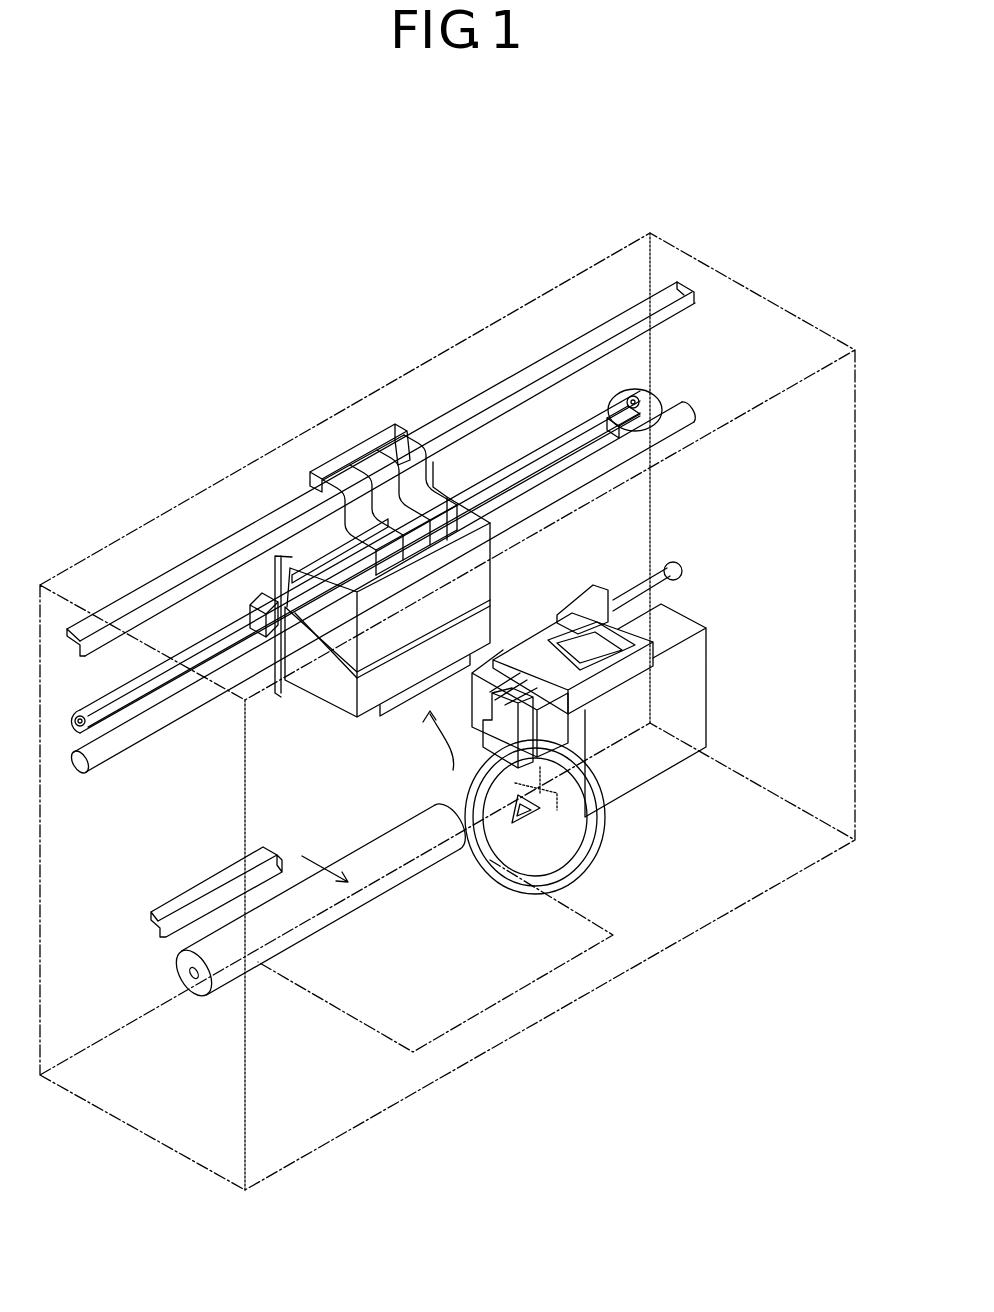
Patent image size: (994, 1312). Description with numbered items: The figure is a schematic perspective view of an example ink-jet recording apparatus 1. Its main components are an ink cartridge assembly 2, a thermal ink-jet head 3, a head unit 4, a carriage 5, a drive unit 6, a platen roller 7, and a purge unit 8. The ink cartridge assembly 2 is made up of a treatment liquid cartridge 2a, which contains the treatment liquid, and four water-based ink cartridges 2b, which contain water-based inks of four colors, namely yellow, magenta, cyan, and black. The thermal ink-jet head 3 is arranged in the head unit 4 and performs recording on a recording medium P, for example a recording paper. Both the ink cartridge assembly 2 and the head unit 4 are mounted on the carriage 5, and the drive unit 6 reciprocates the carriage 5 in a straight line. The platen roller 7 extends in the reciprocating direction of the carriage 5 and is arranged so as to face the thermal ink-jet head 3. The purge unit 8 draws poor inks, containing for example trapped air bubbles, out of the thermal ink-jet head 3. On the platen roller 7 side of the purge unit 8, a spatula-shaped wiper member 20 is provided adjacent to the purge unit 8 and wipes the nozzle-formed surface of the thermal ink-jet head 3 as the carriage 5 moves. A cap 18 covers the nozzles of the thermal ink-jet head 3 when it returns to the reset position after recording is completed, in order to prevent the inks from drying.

The ink-jet recording apparatus 1 is at (329, 245).
The ink cartridge assembly 2 is at (349, 524).
The treatment liquid cartridge 2a is at (359, 560).
The water-based ink cartridges 2b is at (358, 446).
The thermal ink-jet head 3 is at (440, 673).
The head unit 4 is at (441, 753).
The carriage 5 is at (262, 577).
The drive unit 6 is at (675, 267).
The platen roller 7 is at (331, 906).
The purge unit 8 is at (775, 732).
The cap 18 is at (641, 630).
The wiper member 20 is at (503, 720).
The recording medium P is at (379, 1014).